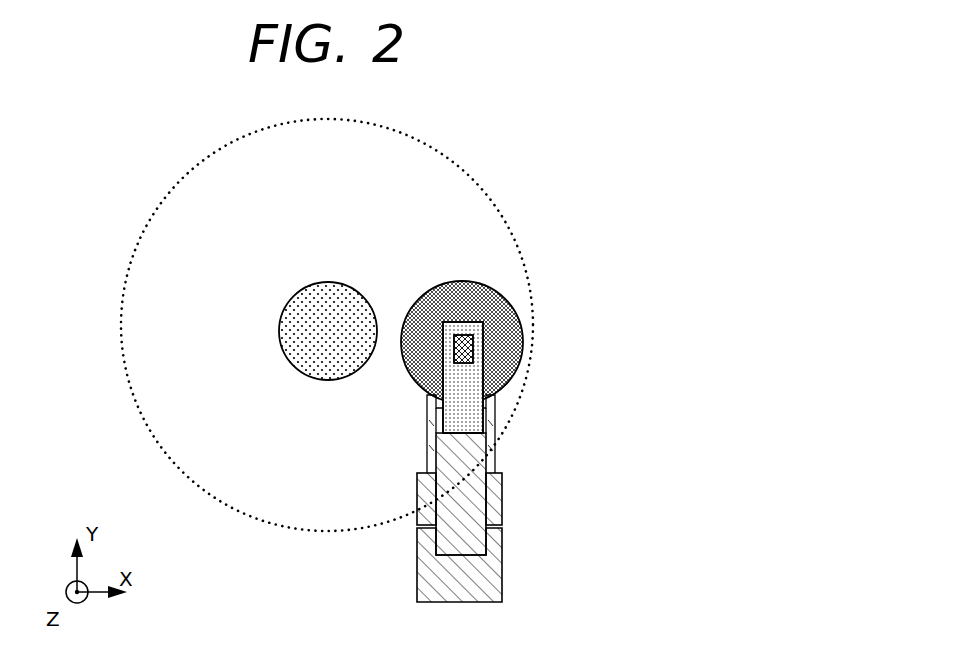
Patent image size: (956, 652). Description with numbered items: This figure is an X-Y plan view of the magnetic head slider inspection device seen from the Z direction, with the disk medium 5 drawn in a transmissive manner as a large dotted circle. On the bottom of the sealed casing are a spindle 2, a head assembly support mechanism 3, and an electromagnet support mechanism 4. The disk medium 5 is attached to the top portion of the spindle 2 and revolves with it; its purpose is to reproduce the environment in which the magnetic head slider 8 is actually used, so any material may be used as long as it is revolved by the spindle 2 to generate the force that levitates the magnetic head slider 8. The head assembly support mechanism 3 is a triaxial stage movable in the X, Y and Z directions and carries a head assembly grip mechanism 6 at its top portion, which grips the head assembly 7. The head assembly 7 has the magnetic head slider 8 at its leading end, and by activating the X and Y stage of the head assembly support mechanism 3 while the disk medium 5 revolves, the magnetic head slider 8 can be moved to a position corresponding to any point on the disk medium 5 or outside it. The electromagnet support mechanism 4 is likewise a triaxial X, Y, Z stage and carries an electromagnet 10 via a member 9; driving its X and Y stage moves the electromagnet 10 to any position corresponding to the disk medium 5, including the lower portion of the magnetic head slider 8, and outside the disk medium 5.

The spindle 2 is at (290, 330).
The head assembly support mechanism 3 is at (490, 578).
The electromagnet support mechanism 4 is at (497, 498).
The disk medium 5 is at (512, 233).
The head assembly grip mechanism 6 is at (473, 545).
The head assembly 7 is at (465, 388).
The magnetic head slider 8 is at (470, 348).
The member 9 is at (495, 428).
The electromagnet 10 is at (507, 315).